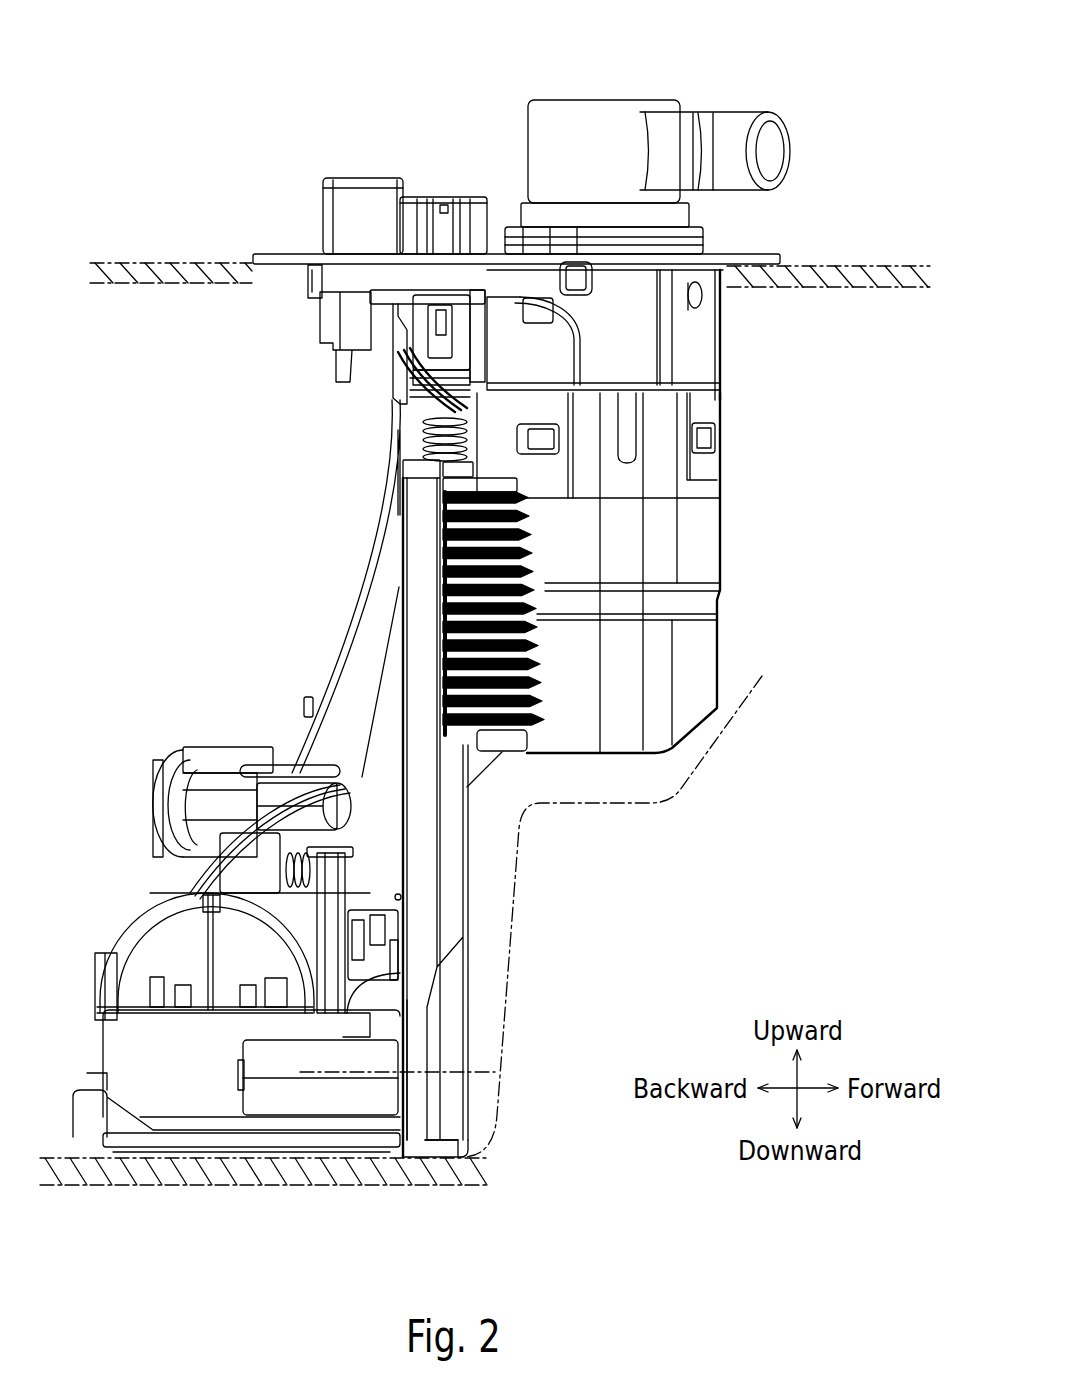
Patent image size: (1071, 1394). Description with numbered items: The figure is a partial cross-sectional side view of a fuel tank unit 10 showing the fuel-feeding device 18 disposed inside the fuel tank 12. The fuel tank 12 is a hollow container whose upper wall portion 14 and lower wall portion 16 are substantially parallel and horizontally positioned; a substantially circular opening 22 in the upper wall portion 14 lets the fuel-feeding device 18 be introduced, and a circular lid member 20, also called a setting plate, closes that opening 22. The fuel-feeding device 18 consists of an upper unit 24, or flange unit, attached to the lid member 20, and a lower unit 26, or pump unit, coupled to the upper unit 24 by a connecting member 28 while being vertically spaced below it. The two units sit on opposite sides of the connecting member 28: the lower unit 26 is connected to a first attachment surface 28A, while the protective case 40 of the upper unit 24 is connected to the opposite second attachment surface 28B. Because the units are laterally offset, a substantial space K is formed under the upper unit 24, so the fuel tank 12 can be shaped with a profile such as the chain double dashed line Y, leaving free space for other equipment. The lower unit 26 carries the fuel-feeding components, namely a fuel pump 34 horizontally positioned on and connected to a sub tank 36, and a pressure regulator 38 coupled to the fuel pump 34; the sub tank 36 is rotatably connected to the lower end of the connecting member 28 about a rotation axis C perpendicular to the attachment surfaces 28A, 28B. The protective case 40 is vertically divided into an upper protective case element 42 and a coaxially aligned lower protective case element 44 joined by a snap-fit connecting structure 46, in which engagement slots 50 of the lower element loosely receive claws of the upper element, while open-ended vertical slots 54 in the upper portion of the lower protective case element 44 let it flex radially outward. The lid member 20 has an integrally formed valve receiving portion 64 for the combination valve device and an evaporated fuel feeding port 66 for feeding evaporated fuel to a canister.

The fuel tank unit 10 is at (395, 92).
The fuel tank 12 is at (485, 729).
The upper wall portion 14 is at (838, 266).
The lower wall portion 16 is at (275, 1172).
The fuel-feeding device 18 is at (289, 593).
The lid member 20 is at (283, 250).
The opening 22 is at (307, 292).
The upper unit 24 is at (775, 498).
The lower unit 26 is at (117, 860).
The connecting member 28 is at (446, 808).
The first attachment surface 28A is at (401, 897).
The second attachment surface 28B is at (470, 703).
The fuel pump 34 is at (172, 955).
The sub tank 36 is at (168, 1060).
The pressure regulator 38 is at (220, 766).
The protective case 40 is at (603, 455).
The upper protective case element 42 is at (517, 357).
The lower protective case element 44 is at (695, 552).
The snap-fit connecting structure 46 is at (717, 446).
The engagement slots 50 is at (480, 424).
The vertical slots 54 is at (627, 412).
The valve receiving portion 64 is at (680, 242).
The evaporated fuel feeding port 66 is at (733, 132).
The rotation axis C is at (502, 1072).
The chain double dashed line Y is at (650, 805).
The space K is at (598, 987).